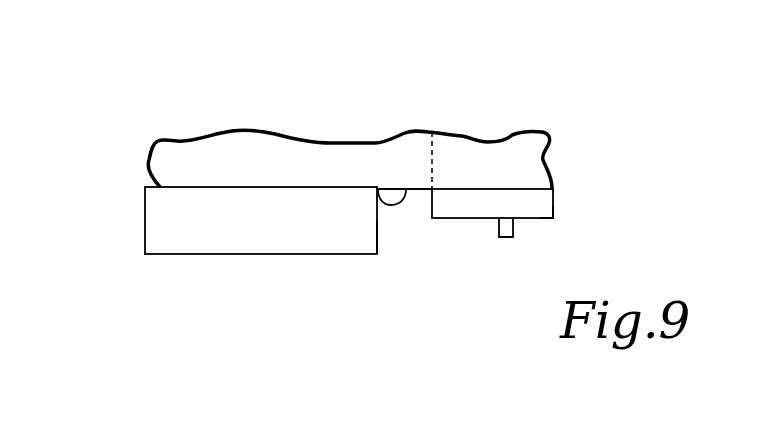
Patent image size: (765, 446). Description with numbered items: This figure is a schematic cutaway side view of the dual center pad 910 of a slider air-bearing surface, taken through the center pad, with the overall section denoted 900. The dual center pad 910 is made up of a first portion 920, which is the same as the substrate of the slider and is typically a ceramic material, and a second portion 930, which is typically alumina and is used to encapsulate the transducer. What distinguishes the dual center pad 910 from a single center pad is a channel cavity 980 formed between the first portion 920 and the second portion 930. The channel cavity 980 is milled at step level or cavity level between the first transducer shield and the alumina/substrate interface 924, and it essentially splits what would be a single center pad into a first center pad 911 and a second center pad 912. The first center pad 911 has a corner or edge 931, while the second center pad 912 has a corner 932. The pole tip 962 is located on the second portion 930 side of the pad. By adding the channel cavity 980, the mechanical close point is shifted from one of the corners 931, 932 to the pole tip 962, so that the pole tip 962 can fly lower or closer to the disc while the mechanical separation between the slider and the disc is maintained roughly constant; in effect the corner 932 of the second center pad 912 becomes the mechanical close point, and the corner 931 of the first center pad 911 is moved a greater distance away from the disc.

The assembly 900 is at (173, 255).
The dual center pad 910 is at (335, 223).
The first center pad 911 is at (292, 233).
The second center pad 912 is at (513, 200).
The first portion 920 is at (148, 213).
The alumina/substrate interface 924 is at (432, 152).
The second portion 930 is at (533, 198).
The corner or edge 931 is at (377, 255).
The corner 932 is at (553, 213).
The pole tip 962 is at (513, 233).
The channel cavity 980 is at (380, 205).